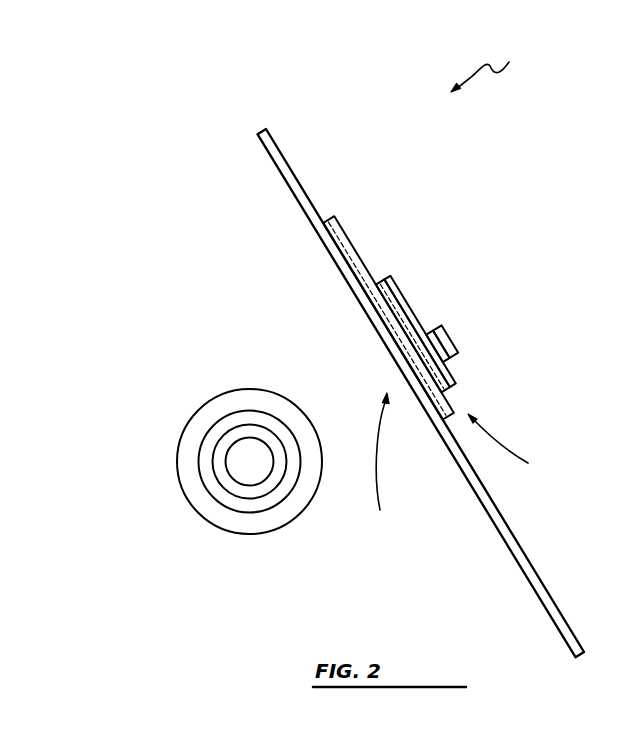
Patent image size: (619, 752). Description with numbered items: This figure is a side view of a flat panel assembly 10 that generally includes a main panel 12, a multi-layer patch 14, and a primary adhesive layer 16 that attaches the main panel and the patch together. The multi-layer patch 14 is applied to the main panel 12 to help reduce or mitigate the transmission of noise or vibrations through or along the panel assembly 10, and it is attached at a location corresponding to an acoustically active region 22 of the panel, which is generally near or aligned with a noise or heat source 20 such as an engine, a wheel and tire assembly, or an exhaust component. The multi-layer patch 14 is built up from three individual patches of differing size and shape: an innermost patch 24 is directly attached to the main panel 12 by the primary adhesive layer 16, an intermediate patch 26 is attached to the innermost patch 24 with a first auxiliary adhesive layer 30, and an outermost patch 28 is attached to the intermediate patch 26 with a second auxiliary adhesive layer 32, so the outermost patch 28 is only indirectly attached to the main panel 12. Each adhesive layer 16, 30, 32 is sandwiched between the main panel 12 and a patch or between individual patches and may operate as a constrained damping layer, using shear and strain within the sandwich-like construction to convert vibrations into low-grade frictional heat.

The panel assembly 10 is at (494, 64).
The main panel 12 is at (273, 140).
The multi-layer patch 14 is at (511, 449).
The primary adhesive layer 16 is at (341, 230).
The noise or heat source 20 is at (249, 461).
The acoustically active region 22 is at (393, 464).
The innermost patch 24 is at (346, 242).
The intermediate patch 26 is at (397, 292).
The outermost patch 28 is at (443, 338).
The auxiliary adhesive layer 30 is at (455, 362).
The auxiliary adhesive layer 32 is at (456, 375).